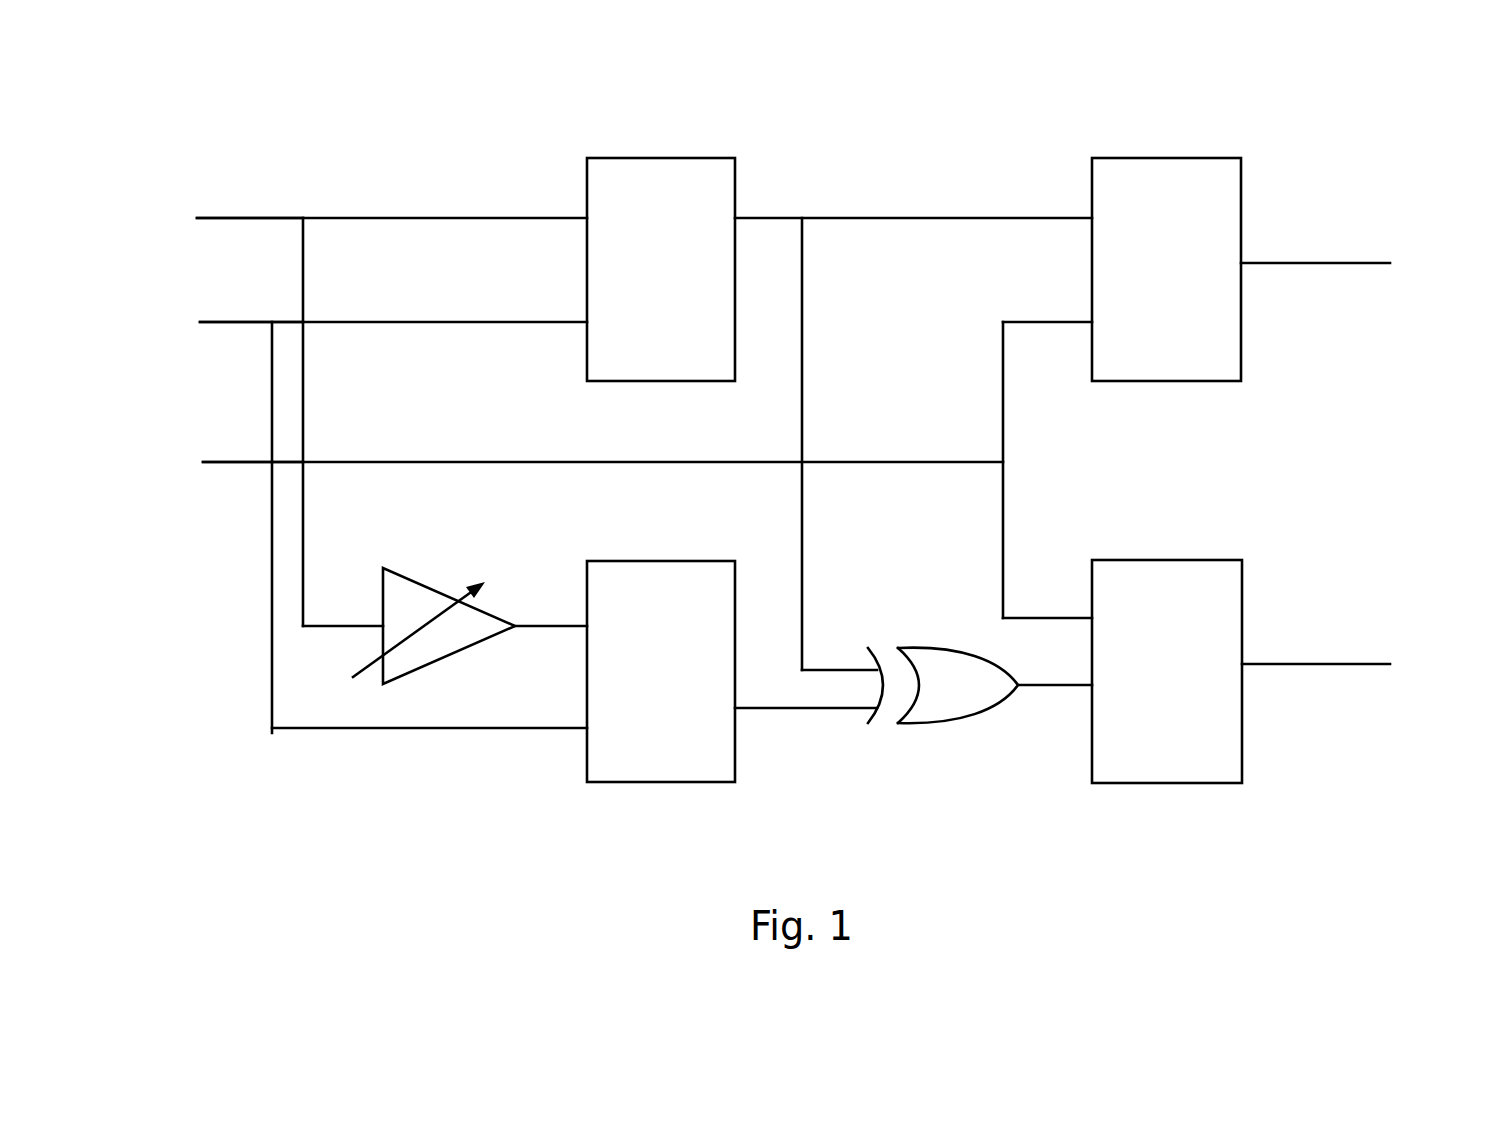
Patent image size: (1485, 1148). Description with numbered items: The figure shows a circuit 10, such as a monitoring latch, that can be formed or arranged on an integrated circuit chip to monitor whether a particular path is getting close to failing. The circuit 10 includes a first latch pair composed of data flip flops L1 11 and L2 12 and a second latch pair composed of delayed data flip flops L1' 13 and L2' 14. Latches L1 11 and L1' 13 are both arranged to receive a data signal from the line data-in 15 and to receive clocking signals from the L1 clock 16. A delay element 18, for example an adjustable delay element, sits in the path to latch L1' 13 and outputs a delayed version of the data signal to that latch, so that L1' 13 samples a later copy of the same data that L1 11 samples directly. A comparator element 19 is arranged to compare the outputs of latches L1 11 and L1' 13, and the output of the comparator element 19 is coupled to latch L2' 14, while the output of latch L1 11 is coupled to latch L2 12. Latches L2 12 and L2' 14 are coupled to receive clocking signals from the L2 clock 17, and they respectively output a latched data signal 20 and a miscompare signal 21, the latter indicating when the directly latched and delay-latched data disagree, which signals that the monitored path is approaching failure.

The circuit 10 is at (445, 120).
The data flip flop L1 11 is at (735, 170).
The data flip flop L2 12 is at (1241, 175).
The delayed data flip flop L1' 13 is at (737, 566).
The delayed data flip flop L2' 14 is at (1242, 571).
The line data-in 15 is at (215, 220).
The L1 clock 16 is at (226, 322).
The L2 clock 17 is at (228, 456).
The delay element 18 is at (415, 578).
The comparator element 19 is at (975, 708).
The latched data signal 20 is at (1337, 263).
The miscompare signal 21 is at (1362, 664).